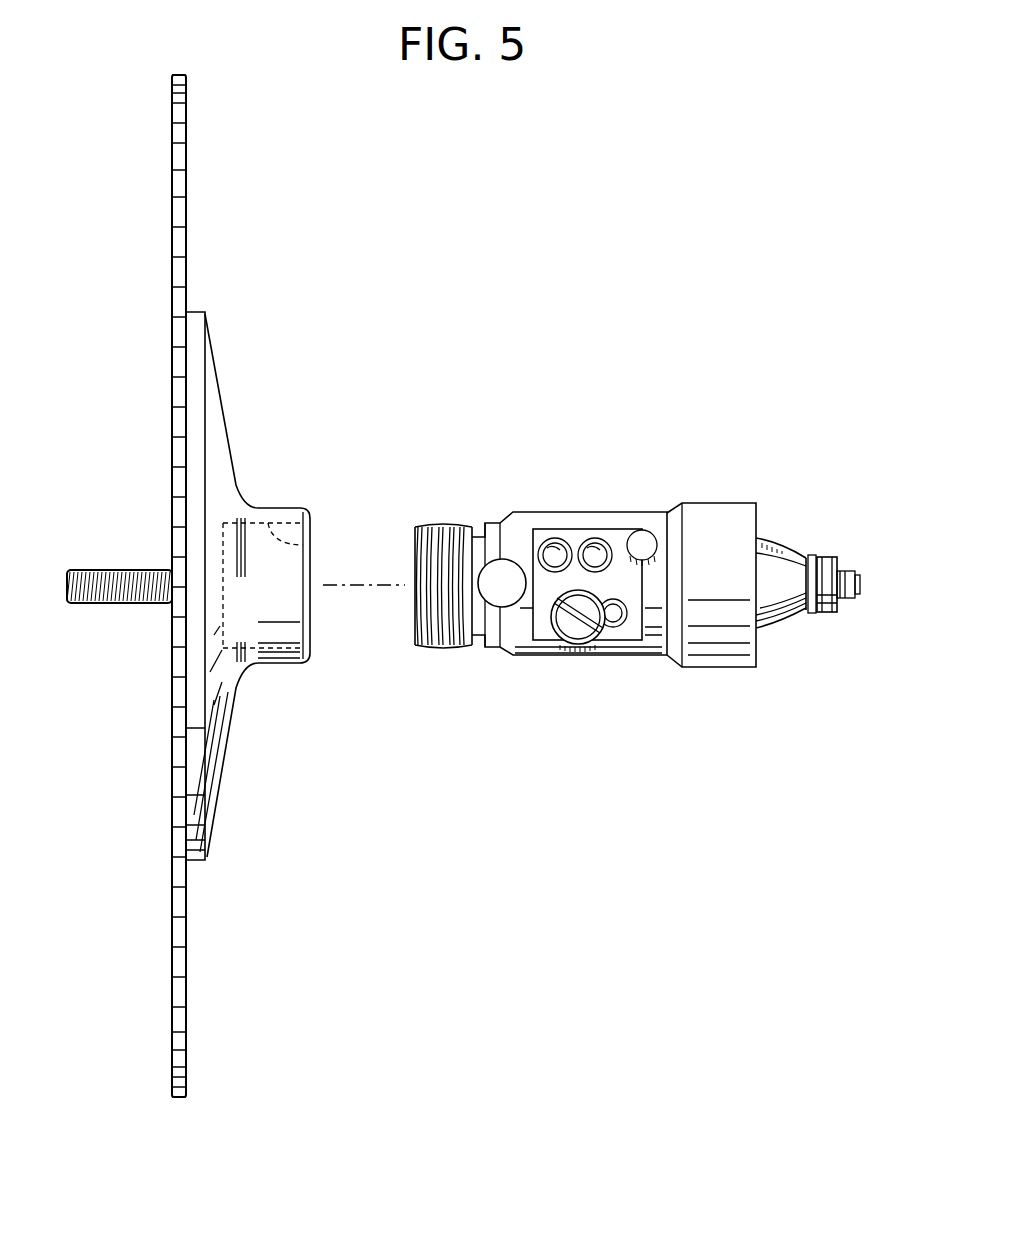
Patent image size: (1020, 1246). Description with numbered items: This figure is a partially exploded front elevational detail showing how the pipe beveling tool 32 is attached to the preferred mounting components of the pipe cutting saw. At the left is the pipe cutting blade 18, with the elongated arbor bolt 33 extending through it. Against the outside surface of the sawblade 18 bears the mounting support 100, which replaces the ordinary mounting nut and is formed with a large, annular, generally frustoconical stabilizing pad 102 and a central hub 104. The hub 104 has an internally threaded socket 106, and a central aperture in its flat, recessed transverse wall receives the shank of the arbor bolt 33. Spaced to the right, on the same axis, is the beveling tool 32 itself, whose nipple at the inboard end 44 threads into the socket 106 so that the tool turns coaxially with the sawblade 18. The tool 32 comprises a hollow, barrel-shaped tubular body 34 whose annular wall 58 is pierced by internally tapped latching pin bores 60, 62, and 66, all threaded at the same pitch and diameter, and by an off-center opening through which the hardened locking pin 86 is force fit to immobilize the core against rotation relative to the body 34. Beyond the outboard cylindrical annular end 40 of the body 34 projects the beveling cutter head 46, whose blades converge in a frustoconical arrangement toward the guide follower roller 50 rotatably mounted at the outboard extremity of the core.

The pipe cutting blade 18 is at (186, 238).
The arbor bolt 33 is at (120, 568).
The mounting support 100 is at (292, 586).
The stabilizing pad 102 is at (230, 738).
The central hub 104 is at (282, 505).
The internally threaded socket 106 is at (322, 544).
The pipe beveling tool 32 is at (635, 553).
The inboard end 44 is at (440, 525).
The latching pin bore 66 is at (545, 540).
The latching pin bore 62 is at (590, 538).
The hardened locking pin 86 is at (630, 532).
The annular wall 58 is at (580, 657).
The latching pin bore 60 is at (618, 630).
The tubular body 34 is at (643, 498).
The outboard cylindrical annular end 40 is at (808, 556).
The beveling cutter head 46 is at (788, 553).
The guide follower roller 50 is at (828, 612).